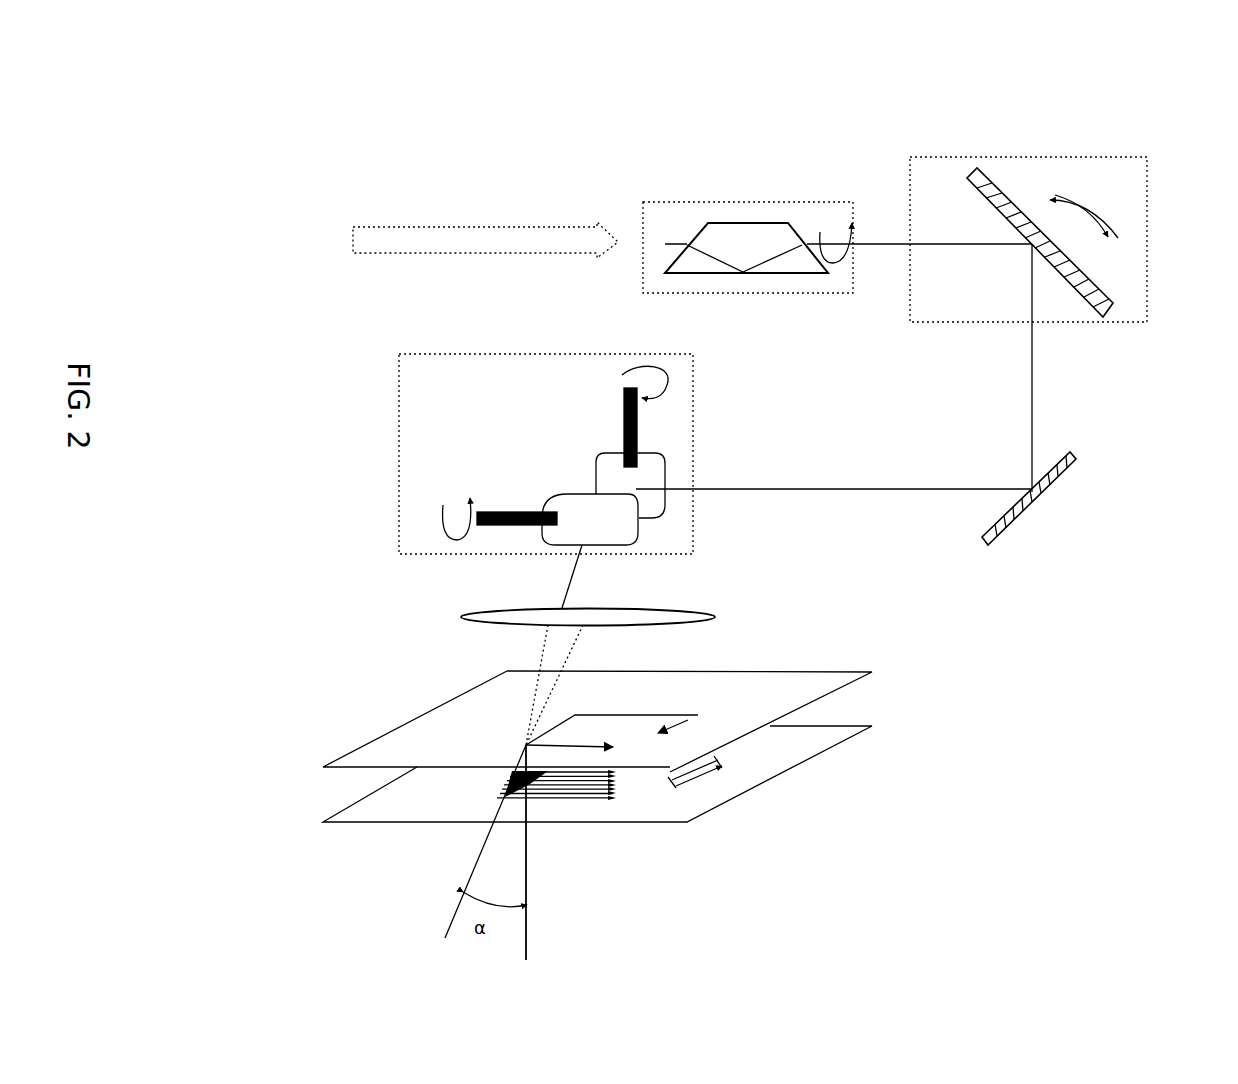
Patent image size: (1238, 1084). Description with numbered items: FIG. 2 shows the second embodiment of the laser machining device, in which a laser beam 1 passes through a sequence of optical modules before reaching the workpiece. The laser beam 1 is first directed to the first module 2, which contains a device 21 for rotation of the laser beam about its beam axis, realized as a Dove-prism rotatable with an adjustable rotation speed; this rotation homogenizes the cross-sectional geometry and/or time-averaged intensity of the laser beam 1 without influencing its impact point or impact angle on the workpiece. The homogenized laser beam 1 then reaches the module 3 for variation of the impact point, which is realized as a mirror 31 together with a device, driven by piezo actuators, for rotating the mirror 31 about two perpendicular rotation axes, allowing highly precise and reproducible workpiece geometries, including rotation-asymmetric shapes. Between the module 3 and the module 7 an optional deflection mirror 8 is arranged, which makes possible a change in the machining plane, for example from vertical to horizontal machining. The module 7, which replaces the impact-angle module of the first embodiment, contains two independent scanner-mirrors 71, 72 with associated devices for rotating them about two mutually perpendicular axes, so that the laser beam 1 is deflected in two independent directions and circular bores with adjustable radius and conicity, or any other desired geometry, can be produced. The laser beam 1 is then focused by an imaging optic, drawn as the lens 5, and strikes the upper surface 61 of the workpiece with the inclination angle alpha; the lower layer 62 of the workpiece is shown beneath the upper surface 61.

The laser beam 1 is at (478, 215).
The first module 2 is at (837, 178).
The device for rotation of the laser beam 21 is at (742, 242).
The module for variation of the impact point 3 is at (1028, 192).
The mirror 31 is at (1013, 203).
The focusing lens 5 is at (717, 617).
The upper surface of the workpiece 61 is at (837, 693).
The lower workpiece layer 62 is at (833, 748).
The module for variation of the impact angle 7 is at (508, 441).
The scanner-mirror 71 is at (617, 473).
The scanner-mirror 72 is at (567, 510).
The deflection mirror 8 is at (1042, 493).